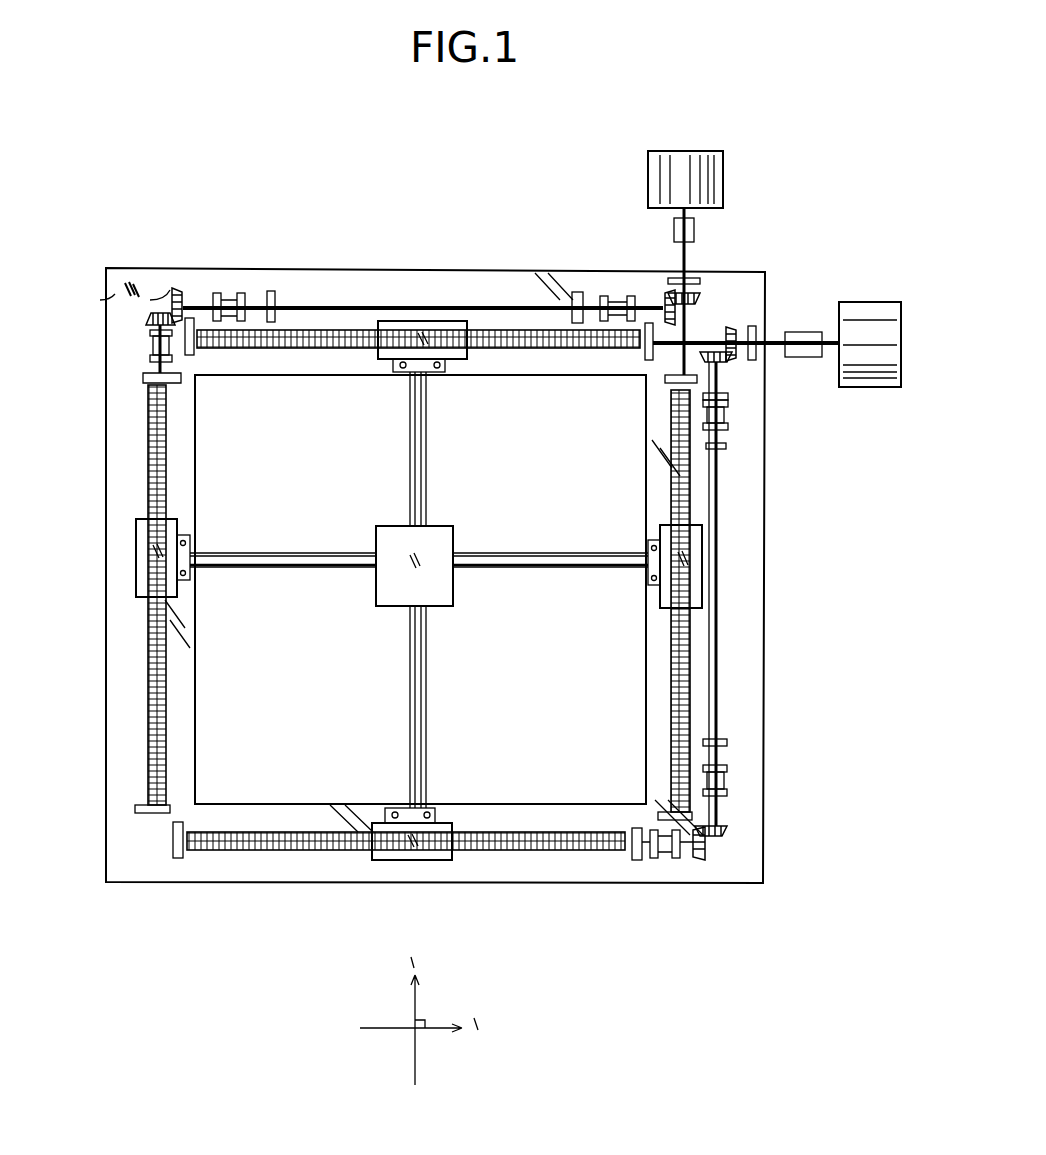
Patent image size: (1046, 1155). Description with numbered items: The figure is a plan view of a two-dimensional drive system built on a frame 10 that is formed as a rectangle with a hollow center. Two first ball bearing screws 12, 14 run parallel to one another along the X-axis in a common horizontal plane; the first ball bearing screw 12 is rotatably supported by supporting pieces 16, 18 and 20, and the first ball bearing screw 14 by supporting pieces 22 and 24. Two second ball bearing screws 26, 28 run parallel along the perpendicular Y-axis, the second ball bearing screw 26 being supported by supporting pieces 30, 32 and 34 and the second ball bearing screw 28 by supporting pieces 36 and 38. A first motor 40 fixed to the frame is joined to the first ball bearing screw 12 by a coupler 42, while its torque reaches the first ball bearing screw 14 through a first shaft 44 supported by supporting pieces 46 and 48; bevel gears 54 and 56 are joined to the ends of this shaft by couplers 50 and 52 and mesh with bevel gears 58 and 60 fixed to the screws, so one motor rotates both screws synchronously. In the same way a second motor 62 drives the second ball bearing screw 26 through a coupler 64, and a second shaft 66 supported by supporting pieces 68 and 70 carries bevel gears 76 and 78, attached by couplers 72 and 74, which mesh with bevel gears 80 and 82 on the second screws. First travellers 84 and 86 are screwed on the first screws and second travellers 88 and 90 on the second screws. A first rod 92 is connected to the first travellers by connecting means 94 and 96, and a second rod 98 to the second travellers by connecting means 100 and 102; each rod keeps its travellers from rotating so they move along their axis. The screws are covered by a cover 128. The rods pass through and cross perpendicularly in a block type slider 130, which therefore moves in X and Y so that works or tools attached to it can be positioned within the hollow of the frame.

The frame 10 is at (745, 668).
The first ball bearing screw 12 is at (345, 330).
The first ball bearing screw 14 is at (280, 850).
The supporting piece 16 is at (760, 338).
The supporting piece 18 is at (646, 345).
The supporting piece 20 is at (200, 352).
The supporting piece 22 is at (665, 860).
The supporting piece 24 is at (178, 860).
The second ball bearing screw 26 is at (670, 690).
The second ball bearing screw 28 is at (148, 677).
The supporting piece 30 is at (699, 290).
The supporting piece 32 is at (673, 440).
The supporting piece 34 is at (665, 815).
The supporting piece 36 is at (150, 348).
The supporting piece 38 is at (135, 812).
The first motor 40 is at (893, 388).
The coupler 42 is at (802, 358).
The first shaft 44 is at (718, 590).
The supporting piece 46 is at (724, 448).
The supporting piece 48 is at (726, 742).
The coupler 50 is at (726, 420).
The coupler 52 is at (726, 778).
The bevel gear 54 is at (726, 397).
The bevel gear 56 is at (720, 834).
The bevel gear 58 is at (736, 330).
The bevel gear 60 is at (712, 866).
The second motor 62 is at (690, 150).
The coupler 64 is at (695, 230).
The second shaft 66 is at (455, 306).
The supporting piece 68 is at (577, 292).
The supporting piece 70 is at (275, 292).
The coupler 72 is at (614, 296).
The coupler 74 is at (230, 293).
The bevel gear 76 is at (668, 305).
The bevel gear 78 is at (176, 288).
The bevel gear 80 is at (676, 305).
The bevel gear 82 is at (148, 318).
The first traveller 84 is at (390, 345).
The first traveller 86 is at (440, 860).
The second traveller 88 is at (690, 552).
The second traveller 90 is at (138, 550).
The first rod 92 is at (428, 455).
The connecting means 94 is at (418, 370).
The connecting means 96 is at (425, 810).
The second rod 98 is at (300, 568).
The connecting means 100 is at (652, 566).
The connecting means 102 is at (187, 548).
The cover 128 is at (128, 282).
The slider 130 is at (400, 600).